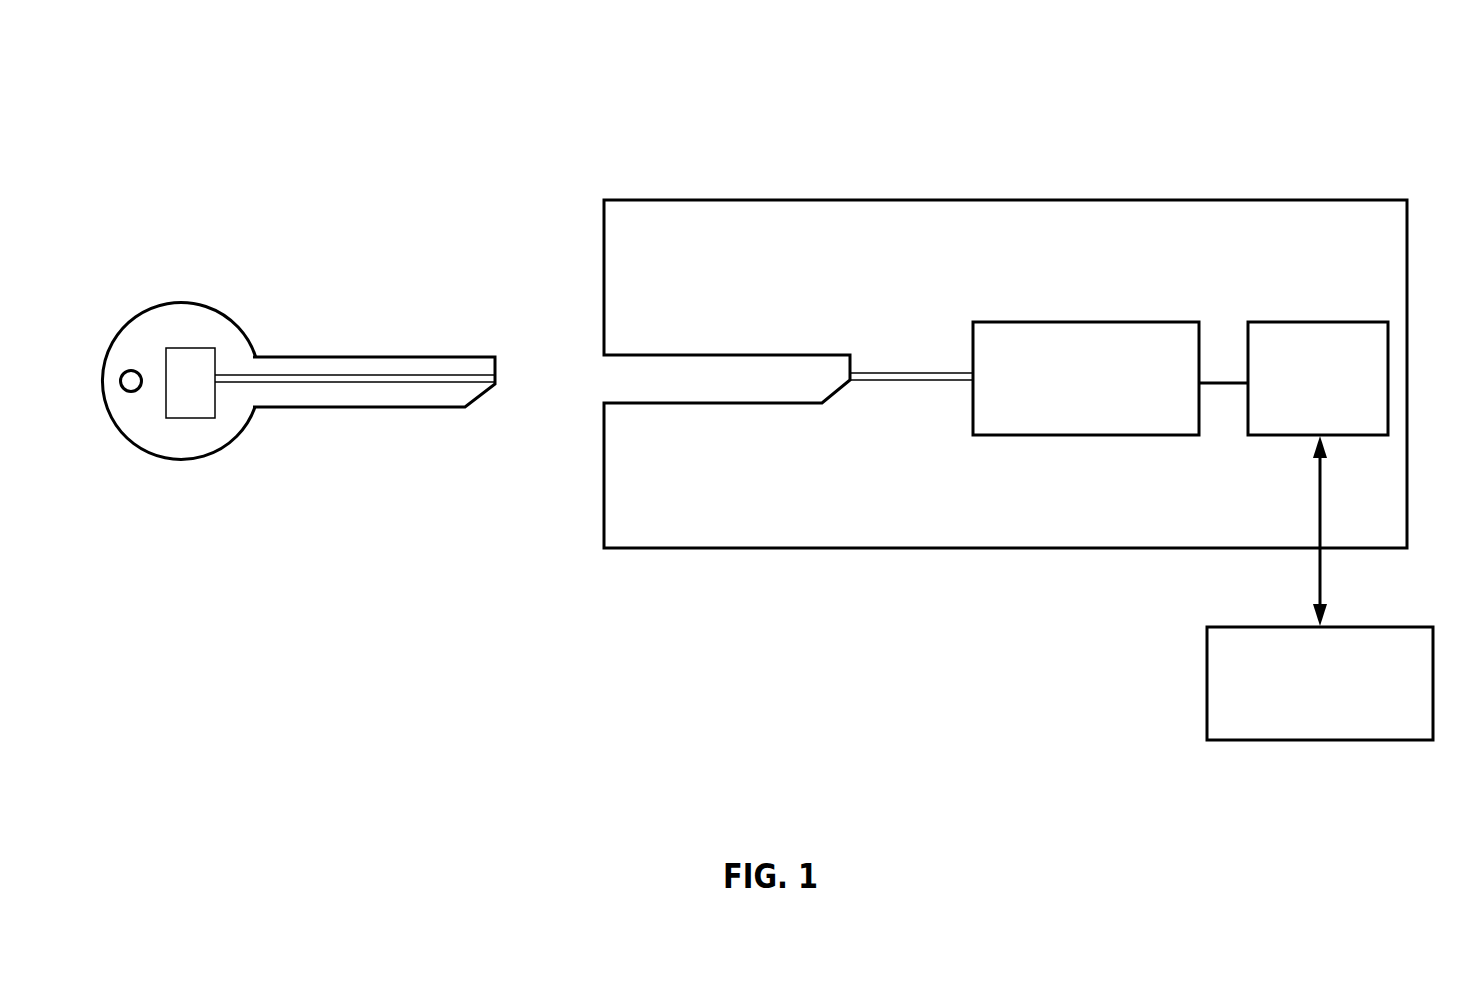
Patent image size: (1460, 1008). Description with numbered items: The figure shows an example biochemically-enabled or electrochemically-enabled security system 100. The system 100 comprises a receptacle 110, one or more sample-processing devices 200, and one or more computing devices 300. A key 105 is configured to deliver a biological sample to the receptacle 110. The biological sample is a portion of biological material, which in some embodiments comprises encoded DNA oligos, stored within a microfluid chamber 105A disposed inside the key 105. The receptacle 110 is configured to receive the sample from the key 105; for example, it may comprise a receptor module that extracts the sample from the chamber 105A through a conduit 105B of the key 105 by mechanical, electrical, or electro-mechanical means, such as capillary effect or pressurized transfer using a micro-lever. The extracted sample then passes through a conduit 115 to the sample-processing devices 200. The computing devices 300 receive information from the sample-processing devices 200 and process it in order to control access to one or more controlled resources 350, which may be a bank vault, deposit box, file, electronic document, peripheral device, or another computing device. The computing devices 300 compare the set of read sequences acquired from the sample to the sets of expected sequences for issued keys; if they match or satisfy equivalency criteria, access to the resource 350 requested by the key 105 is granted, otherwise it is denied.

The security system 100 is at (542, 140).
The key 105 is at (323, 338).
The microfluid chamber 105A is at (198, 407).
The conduit 105B is at (378, 385).
The receptacle 110 is at (728, 403).
The conduit 115 is at (884, 382).
The sample-processing device 200 is at (1068, 422).
The computing device 300 is at (1302, 422).
The controlled resource 350 is at (1302, 724).